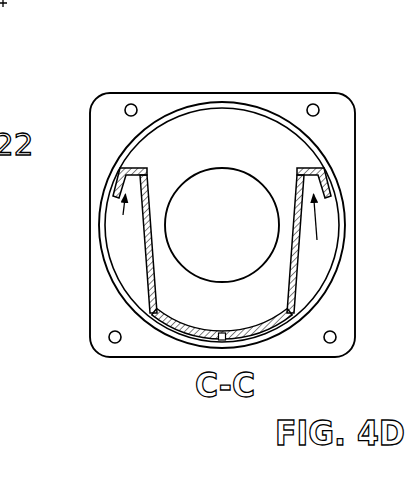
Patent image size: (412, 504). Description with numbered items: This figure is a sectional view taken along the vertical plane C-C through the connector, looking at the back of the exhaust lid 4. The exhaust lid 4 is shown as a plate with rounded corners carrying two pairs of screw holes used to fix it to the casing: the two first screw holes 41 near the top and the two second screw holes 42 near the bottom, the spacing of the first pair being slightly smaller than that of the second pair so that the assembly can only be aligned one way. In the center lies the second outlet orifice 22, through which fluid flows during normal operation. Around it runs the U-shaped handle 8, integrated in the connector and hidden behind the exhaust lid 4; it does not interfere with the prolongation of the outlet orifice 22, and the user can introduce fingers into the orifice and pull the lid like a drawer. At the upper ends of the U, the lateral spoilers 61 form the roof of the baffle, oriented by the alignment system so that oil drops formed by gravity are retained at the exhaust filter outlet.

The exhaust lid 4 is at (78, 196).
The handle profile 8 is at (148, 263).
The second outlet orifice 22 is at (209, 236).
The first screw holes 41 is at (131, 104).
The second screw holes 42 is at (116, 344).
The lateral spoilers 61 is at (123, 215).